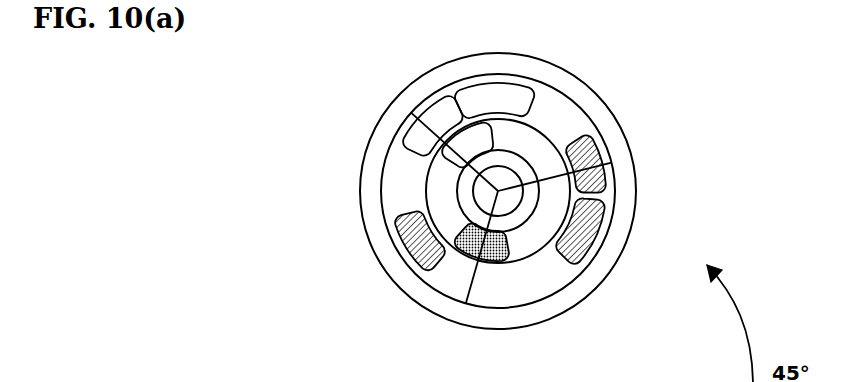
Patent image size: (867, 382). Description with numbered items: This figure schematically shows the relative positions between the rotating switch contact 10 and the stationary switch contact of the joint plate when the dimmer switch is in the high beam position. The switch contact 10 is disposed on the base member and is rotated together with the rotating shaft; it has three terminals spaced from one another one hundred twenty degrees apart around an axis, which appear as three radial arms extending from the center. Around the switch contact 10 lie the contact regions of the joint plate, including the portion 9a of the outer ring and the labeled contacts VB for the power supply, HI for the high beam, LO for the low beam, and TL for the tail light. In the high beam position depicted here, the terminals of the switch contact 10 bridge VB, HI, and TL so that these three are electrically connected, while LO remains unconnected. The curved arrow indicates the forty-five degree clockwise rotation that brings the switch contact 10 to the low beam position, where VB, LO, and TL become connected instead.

The housing ring 9a is at (523, 68).
The switch contact 10 is at (553, 153).
The power supply VB is at (485, 92).
The tail light TL is at (603, 217).
The low beam LO is at (400, 243).
The high beam HI is at (497, 260).